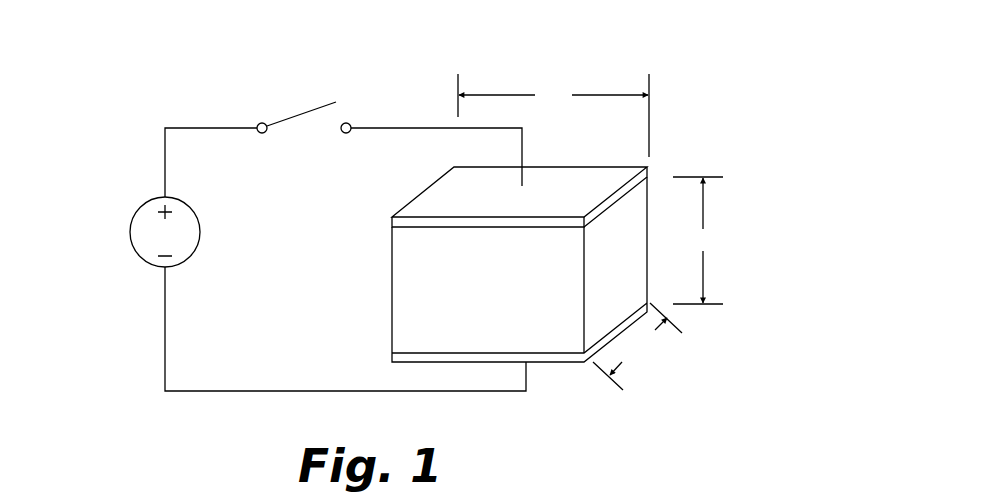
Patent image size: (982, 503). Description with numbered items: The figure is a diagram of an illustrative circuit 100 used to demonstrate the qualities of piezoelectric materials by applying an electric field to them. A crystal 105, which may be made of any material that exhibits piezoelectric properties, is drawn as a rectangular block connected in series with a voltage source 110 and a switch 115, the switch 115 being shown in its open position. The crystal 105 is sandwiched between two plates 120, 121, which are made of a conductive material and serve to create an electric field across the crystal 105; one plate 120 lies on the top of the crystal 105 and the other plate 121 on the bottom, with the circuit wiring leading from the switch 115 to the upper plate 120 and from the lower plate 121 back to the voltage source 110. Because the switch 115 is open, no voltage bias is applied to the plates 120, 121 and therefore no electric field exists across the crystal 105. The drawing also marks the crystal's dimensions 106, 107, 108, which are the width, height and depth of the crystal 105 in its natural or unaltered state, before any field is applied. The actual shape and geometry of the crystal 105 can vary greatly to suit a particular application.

The circuit 100 is at (123, 90).
The crystal 105 is at (392, 283).
The crystal dimension 106 is at (553, 115).
The crystal dimension 107 is at (698, 240).
The crystal dimension 108 is at (637, 346).
The voltage source 110 is at (130, 232).
The switch 115 is at (290, 117).
The plate 120 is at (413, 200).
The plate 121 is at (390, 360).